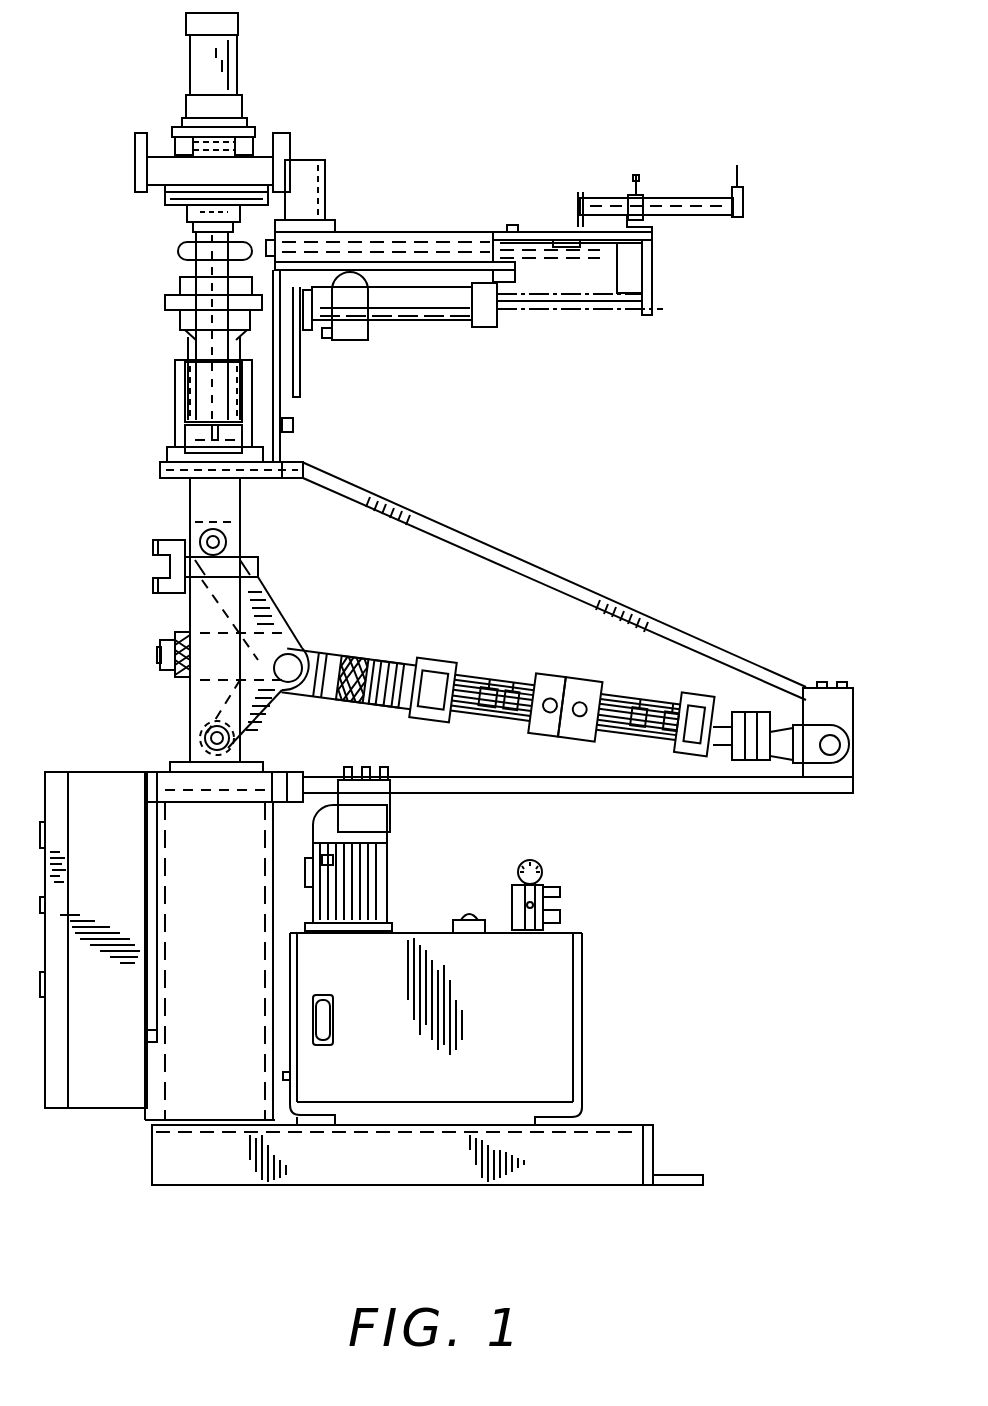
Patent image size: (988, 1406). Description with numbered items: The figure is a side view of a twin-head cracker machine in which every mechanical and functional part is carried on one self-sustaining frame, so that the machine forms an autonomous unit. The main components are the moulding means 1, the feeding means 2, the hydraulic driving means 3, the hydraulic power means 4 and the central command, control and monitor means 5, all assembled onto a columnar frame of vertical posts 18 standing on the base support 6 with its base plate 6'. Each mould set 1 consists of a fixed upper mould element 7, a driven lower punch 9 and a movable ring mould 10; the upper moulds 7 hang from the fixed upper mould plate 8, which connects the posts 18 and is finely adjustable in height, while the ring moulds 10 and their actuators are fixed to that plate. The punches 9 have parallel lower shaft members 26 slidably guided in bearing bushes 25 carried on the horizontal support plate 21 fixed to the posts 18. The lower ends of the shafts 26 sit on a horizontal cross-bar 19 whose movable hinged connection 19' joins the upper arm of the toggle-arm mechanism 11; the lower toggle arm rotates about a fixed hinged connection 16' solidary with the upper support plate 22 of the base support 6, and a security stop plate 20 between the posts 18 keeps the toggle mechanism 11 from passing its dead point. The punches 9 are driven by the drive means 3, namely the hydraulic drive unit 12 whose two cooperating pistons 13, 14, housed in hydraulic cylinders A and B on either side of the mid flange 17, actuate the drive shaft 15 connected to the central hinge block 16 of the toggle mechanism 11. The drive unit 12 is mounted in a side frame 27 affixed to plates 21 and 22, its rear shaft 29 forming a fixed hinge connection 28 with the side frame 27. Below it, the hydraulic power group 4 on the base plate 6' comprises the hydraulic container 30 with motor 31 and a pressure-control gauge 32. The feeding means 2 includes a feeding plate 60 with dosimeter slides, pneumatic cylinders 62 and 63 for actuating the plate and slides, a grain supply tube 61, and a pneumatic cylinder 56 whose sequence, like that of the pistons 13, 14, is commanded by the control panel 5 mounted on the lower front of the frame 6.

The moulding means 1 is at (142, 285).
The feeding means 2 is at (459, 213).
The hydraulic driving means 3 is at (557, 675).
The hydraulic power means 4 is at (476, 1019).
The central command, control and monitor means 5 is at (43, 772).
The base support 6 is at (210, 1024).
The base plate 6' is at (427, 1185).
The fixed upper mould element 7 is at (167, 210).
The fixed upper mould plate 8 is at (147, 163).
The punch 9 is at (180, 303).
The ring mould 10 is at (178, 250).
The toggle-arm mechanism 11 is at (275, 598).
The hydraulic drive unit 12 is at (538, 700).
The piston 13 is at (463, 720).
The piston 14 is at (620, 717).
The drive shaft 15 is at (327, 660).
The central hinge block 16 is at (329, 639).
The fixed hinged connection 16' is at (271, 743).
The mid flange 17 is at (562, 692).
The vertical posts 18 is at (183, 498).
The horizontal cross-bar 19 is at (249, 526).
The movable hinged connection 19' is at (261, 556).
The security stop plate 20 is at (170, 588).
The horizontal support plate 21 is at (150, 470).
The upper support plate 22 is at (163, 780).
The bearing bushes 25 is at (172, 398).
The lower shaft members 26 is at (190, 338).
The side frame 27 is at (703, 647).
The fixed hinge connection 28 is at (818, 763).
The shaft 29 is at (757, 760).
The hydraulic container 30 is at (552, 1057).
The motor 31 is at (387, 873).
The pressure-control gauge 32 is at (543, 872).
The pneumatic cylinder 56 is at (237, 75).
The feeding plate 60 is at (365, 230).
The grain supply tube 61 is at (327, 180).
The pneumatic cylinder 62 is at (403, 320).
The pneumatic cylinder 63 is at (680, 203).
The hydraulic cylinder A is at (497, 670).
The hydraulic cylinder B is at (627, 692).